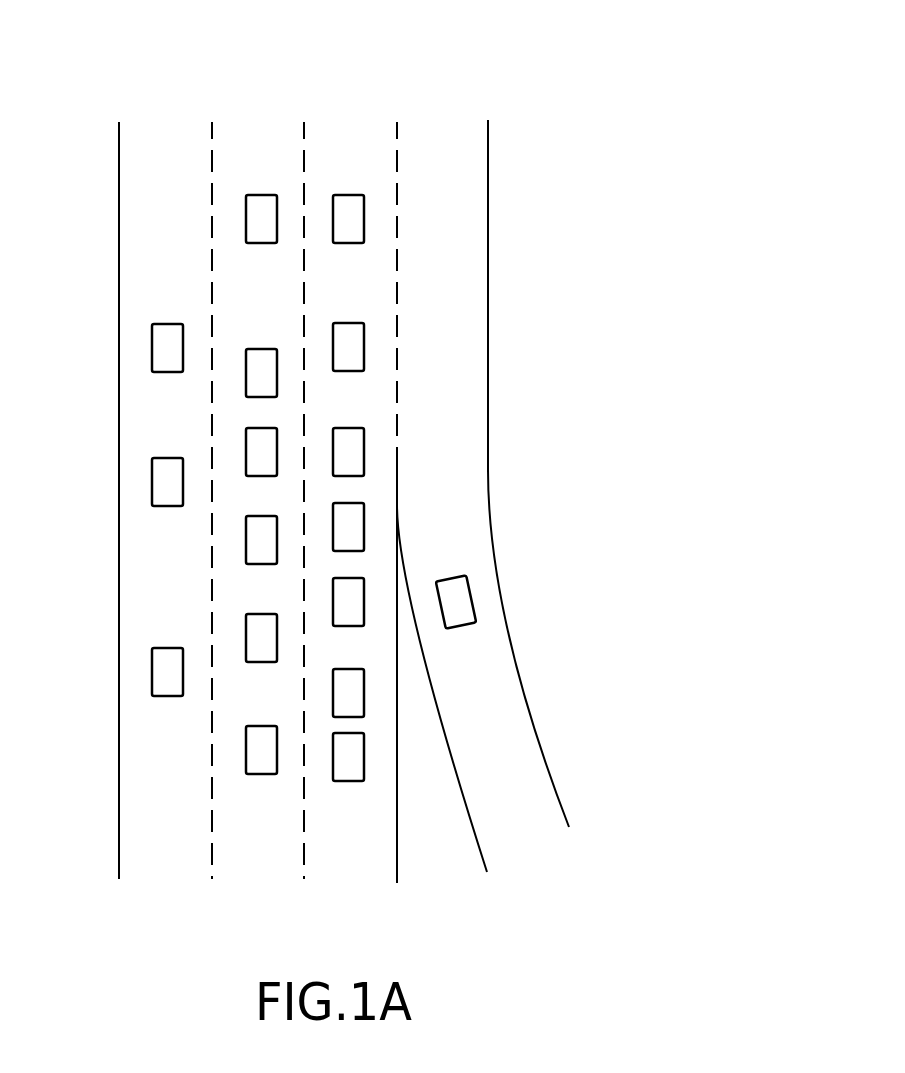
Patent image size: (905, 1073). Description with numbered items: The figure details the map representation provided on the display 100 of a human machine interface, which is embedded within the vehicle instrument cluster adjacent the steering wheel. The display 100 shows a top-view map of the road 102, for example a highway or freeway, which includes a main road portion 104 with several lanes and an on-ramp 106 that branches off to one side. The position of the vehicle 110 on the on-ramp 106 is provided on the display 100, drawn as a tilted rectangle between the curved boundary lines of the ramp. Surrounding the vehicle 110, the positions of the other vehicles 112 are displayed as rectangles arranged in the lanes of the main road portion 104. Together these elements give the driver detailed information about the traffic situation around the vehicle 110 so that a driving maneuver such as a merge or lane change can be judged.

The display 100 is at (578, 95).
The road 102 is at (243, 143).
The main road portion 104 is at (148, 579).
The on-ramp 106 is at (507, 770).
The vehicle 110 is at (465, 597).
The other vehicles 112 is at (253, 748).